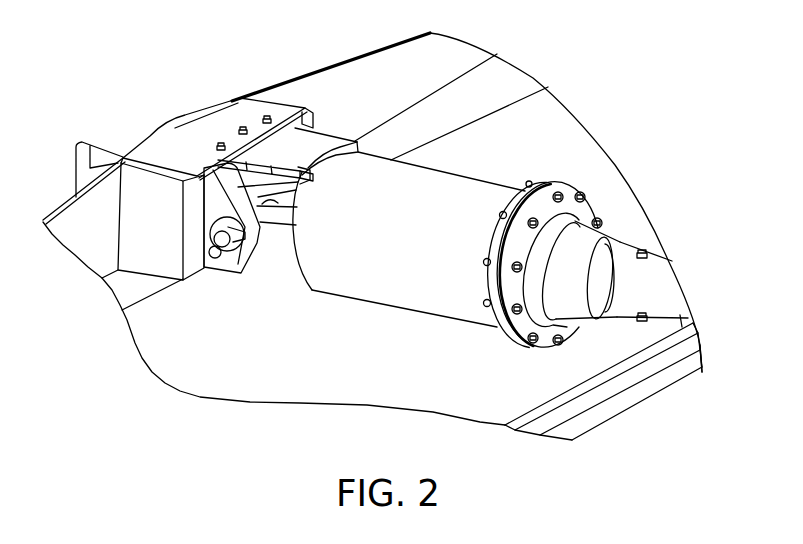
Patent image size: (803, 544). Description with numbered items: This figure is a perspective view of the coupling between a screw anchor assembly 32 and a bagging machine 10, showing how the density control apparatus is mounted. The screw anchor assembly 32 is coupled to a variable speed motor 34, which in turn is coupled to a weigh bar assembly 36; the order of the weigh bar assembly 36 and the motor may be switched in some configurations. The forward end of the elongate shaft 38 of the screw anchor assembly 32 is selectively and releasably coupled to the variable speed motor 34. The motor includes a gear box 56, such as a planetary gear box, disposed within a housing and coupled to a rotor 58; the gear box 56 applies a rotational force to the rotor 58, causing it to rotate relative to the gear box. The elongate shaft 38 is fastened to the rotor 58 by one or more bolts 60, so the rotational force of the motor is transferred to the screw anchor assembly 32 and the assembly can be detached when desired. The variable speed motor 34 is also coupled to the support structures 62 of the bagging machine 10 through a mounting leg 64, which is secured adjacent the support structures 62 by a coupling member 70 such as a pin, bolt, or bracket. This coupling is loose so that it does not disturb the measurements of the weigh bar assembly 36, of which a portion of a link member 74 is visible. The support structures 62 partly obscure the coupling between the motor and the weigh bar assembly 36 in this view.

The bagging machine 10 is at (442, 48).
The screw anchor assembly 32 is at (650, 335).
The variable speed motor 34 is at (570, 147).
The weigh bar assembly 36 is at (320, 94).
The elongate shaft 38 is at (703, 373).
The gear box 56 is at (456, 292).
The rotor 58 is at (627, 238).
The bolts 60 is at (652, 252).
The support structures 62 is at (157, 263).
The mounting leg 64 is at (277, 247).
The coupling member 70 is at (204, 268).
The link member 74 is at (300, 189).